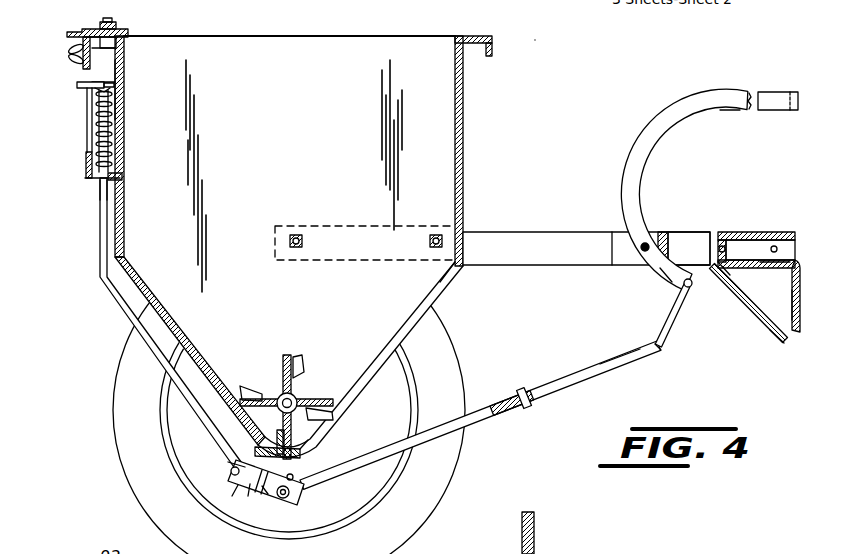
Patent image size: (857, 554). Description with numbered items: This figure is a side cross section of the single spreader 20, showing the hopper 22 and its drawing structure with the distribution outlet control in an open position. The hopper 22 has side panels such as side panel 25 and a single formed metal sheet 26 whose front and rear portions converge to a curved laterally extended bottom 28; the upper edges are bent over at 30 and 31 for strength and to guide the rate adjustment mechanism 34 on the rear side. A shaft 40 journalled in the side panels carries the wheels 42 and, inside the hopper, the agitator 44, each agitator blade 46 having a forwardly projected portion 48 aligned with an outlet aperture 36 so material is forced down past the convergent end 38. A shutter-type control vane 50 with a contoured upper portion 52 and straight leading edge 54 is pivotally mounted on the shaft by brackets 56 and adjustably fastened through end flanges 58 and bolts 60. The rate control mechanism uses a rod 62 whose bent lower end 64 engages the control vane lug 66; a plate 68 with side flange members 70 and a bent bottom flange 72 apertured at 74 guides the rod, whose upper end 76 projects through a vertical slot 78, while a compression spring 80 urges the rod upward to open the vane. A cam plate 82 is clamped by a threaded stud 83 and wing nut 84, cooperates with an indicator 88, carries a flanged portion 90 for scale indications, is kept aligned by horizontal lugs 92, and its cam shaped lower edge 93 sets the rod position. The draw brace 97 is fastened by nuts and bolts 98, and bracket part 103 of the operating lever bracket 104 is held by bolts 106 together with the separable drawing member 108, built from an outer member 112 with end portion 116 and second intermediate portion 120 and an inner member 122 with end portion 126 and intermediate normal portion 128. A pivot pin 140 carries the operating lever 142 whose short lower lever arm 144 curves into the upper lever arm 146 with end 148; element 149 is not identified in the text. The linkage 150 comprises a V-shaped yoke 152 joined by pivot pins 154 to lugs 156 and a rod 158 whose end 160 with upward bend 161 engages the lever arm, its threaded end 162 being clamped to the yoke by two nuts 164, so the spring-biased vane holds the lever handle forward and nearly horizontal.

The single spreader 20 is at (533, 58).
The hopper 22 is at (446, 137).
The side panel 25 is at (343, 111).
The formed metal sheet 26 is at (452, 290).
The curved laterally extended bottom 28 is at (232, 462).
The bent-over upper edge 30 is at (484, 34).
The bent-over rear edge 31 is at (113, 56).
The rate adjustment mechanism 34 is at (65, 34).
The outlet aperture 36 is at (290, 418).
The convergent end 38 is at (300, 416).
The shaft 40 is at (280, 392).
The wheel 42 is at (114, 427).
The agitator 44 is at (292, 389).
The agitator blade 46 is at (286, 356).
The forwardly projected portion 48 is at (300, 358).
The shutter-type control vane 50 is at (250, 484).
The contoured upper portion 52 is at (262, 488).
The leading edge 54 is at (276, 448).
The bracket 56 is at (300, 456).
The end flange 58 is at (300, 482).
The bolt 60 is at (292, 494).
The rod 62 is at (150, 346).
The bent lower end 64 is at (230, 471).
The control vane lug 66 is at (236, 482).
The plate 68 is at (86, 162).
The side flange member 70 is at (123, 80).
The bent bottom flange 72 is at (100, 186).
The aperture 74 is at (122, 177).
The upper end 76 is at (98, 92).
The vertical slot 78 is at (87, 128).
The compression spring 80 is at (113, 131).
The cam plate 82 is at (84, 66).
The threaded stud 83 is at (103, 20).
The wing nut 84 is at (66, 50).
The indicator 88 is at (114, 23).
The flanged portion 90 is at (90, 30).
The horizontal lug 92 is at (118, 43).
The cam shaped lower edge 93 is at (78, 86).
The draw brace 97 is at (566, 232).
The nuts and bolts 98 is at (298, 234).
The bracket part 103 is at (696, 232).
The operating lever bracket 104 is at (670, 220).
The bolt 106 is at (738, 238).
The separable drawing member 108 is at (748, 323).
The outer member 112 is at (776, 334).
The end portion 116 is at (784, 222).
The second intermediate portion 120 is at (689, 248).
The inner member 122 is at (784, 266).
The end portion 126 is at (728, 280).
The intermediate normal portion 128 is at (791, 300).
The pivot pin 140 is at (642, 250).
The operating lever 142 is at (734, 110).
The short lower lever arm 144 is at (668, 278).
The upper lever arm 146 is at (692, 112).
The end 148 is at (790, 92).
The handle grip end 149 is at (529, 512).
The linkage 150 is at (508, 384).
The V-shaped yoke 152 is at (426, 442).
The pivot pin 154 is at (296, 504).
The lug 156 is at (266, 500).
The rod 158 is at (628, 356).
The end 160 is at (686, 292).
The upward bend 161 is at (659, 349).
The threaded end 162 is at (510, 410).
The nuts 164 is at (523, 390).